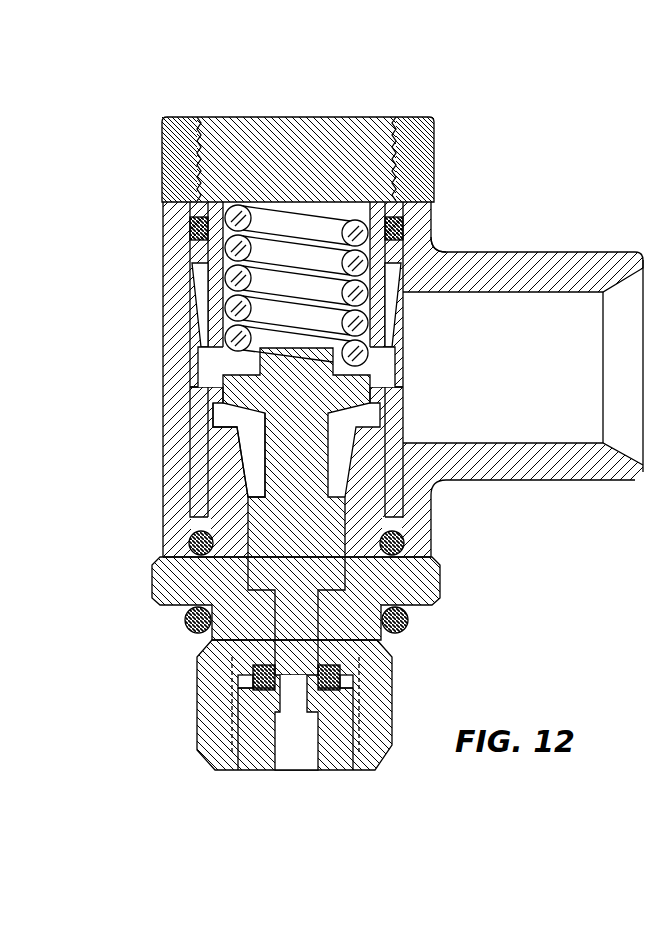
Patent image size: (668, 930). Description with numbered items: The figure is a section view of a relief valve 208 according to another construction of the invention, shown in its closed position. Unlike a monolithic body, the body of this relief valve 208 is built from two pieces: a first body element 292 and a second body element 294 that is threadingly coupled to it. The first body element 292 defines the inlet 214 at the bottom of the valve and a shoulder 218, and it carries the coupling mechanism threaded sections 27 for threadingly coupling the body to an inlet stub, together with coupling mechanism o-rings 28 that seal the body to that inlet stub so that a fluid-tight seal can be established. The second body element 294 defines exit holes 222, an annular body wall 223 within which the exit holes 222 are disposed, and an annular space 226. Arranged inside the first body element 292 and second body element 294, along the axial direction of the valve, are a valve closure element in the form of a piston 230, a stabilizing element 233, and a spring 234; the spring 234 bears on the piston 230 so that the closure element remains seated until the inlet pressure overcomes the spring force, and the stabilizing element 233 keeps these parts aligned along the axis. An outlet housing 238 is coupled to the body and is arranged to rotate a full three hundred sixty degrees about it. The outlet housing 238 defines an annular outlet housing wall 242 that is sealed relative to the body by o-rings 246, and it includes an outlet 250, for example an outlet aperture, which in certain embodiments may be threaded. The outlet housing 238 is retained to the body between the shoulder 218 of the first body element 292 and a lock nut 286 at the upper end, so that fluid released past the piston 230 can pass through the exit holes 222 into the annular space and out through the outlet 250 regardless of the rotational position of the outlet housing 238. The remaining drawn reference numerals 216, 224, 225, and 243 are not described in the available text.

The relief valve 208 is at (556, 153).
The inlet 214 is at (295, 762).
The poppet 216 is at (345, 437).
The shoulder 218 is at (440, 579).
The exit holes 222 is at (212, 362).
The annular body wall 223 is at (495, 257).
The fillet 224 is at (437, 266).
The retainer pocket 225 is at (405, 326).
The annular space 226 is at (200, 292).
The piston 230 is at (404, 540).
The stabilizing element 233 is at (228, 433).
The spring 234 is at (403, 212).
The outlet housing 238 is at (500, 308).
The annular outlet housing wall 242 is at (170, 473).
The sleeve 243 is at (186, 327).
The o-rings 246 is at (189, 540).
The outlet 250 is at (512, 440).
The coupling mechanism threaded sections 27 is at (199, 702).
The coupling mechanism o-rings 28 is at (189, 630).
The lock nut 286 is at (162, 152).
The first body element 292 is at (358, 661).
The second body element 294 is at (278, 162).